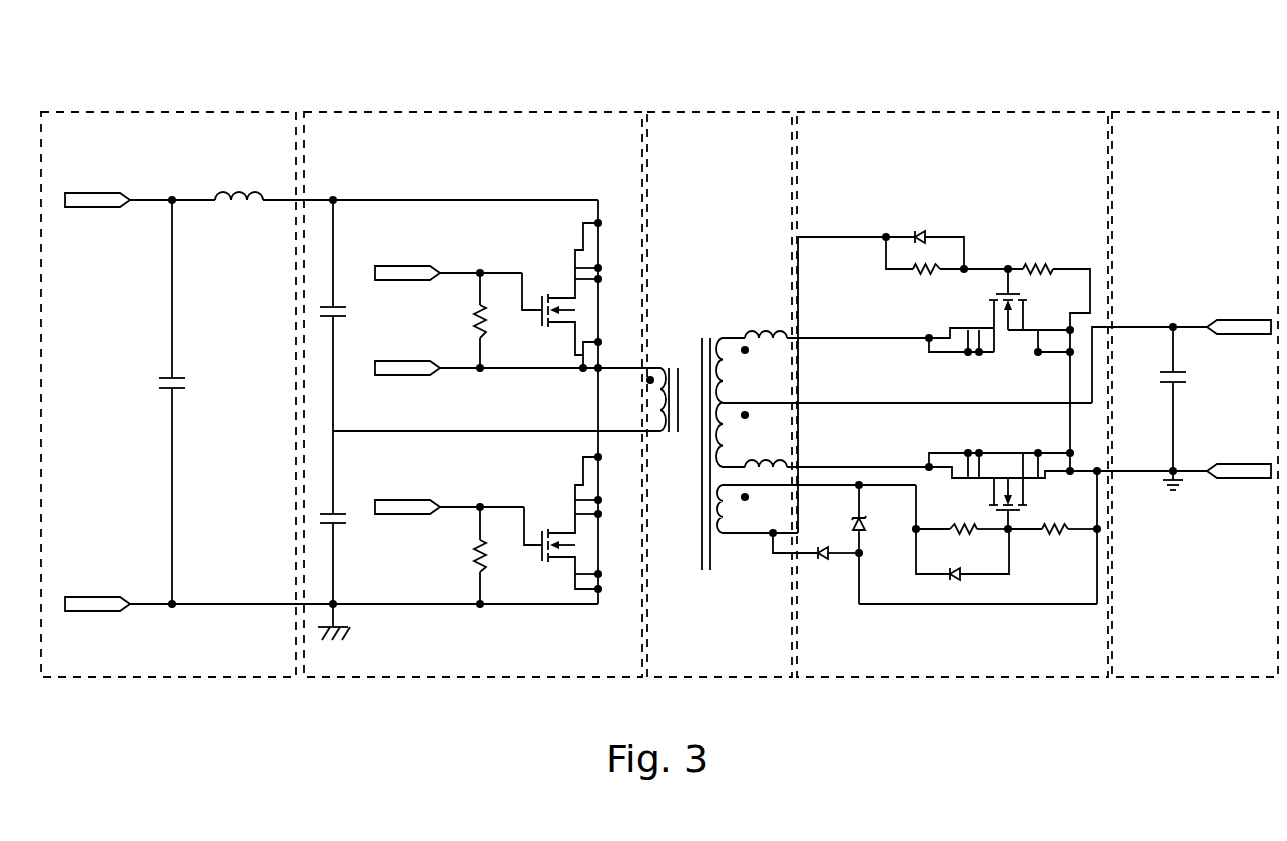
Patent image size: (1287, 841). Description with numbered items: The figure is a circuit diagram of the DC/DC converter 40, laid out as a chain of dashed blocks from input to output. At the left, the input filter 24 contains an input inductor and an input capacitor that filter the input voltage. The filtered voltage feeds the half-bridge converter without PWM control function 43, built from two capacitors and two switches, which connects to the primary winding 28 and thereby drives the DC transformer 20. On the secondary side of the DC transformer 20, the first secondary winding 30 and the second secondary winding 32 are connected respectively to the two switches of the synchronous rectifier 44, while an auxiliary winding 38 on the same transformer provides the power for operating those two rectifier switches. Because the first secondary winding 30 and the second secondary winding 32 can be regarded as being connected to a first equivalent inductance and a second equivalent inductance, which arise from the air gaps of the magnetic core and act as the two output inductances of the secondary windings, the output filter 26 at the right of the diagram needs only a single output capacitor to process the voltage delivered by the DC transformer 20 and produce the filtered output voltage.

The DC/DC converter 40 is at (991, 84).
The input filter 24 is at (250, 660).
The half-bridge converter without PWM control function 43 is at (581, 660).
The DC transformer 20 is at (715, 660).
The synchronous rectifier 44 is at (846, 660).
The output filter 26 is at (1216, 660).
The primary winding 28 is at (668, 364).
The first secondary winding 30 is at (718, 350).
The second secondary winding 32 is at (720, 447).
The auxiliary winding 38 is at (722, 505).